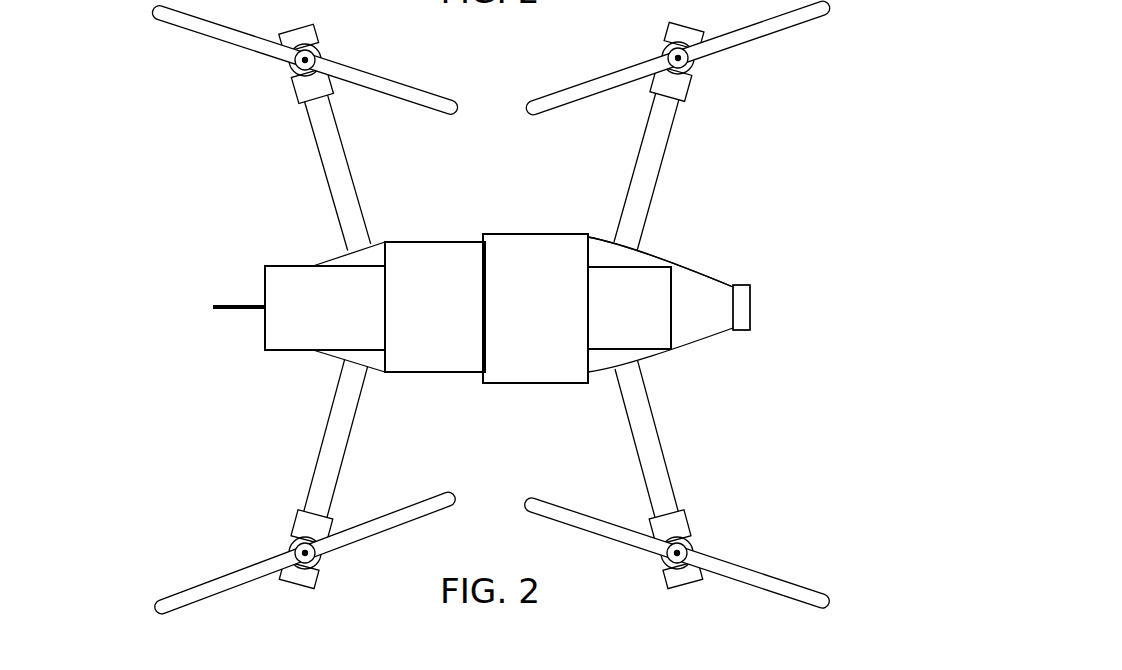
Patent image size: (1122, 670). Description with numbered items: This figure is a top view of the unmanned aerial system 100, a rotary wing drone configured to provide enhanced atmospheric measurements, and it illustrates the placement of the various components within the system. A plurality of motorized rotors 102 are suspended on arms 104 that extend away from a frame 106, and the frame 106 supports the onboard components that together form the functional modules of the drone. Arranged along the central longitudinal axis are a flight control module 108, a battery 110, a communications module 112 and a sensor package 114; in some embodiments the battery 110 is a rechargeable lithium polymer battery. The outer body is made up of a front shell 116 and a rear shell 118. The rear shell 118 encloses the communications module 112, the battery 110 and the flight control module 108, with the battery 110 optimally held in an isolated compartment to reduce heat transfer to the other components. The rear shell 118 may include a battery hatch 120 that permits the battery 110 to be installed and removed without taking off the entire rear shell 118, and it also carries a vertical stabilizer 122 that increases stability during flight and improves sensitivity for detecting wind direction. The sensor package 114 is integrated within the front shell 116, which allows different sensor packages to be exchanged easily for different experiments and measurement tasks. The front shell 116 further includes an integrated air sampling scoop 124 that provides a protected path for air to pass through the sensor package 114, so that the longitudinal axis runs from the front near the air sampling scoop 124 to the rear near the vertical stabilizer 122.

The unmanned aerial system 100 is at (272, 404).
The motorized rotors 102 is at (293, 66).
The arms 104 is at (317, 115).
The frame 106 is at (457, 372).
The flight control module 108 is at (535, 308).
The battery 110 is at (435, 307).
The communications module 112 is at (325, 308).
The sensor package 114 is at (629, 308).
The front shell 116 is at (653, 258).
The rear shell 118 is at (494, 234).
The battery hatch 120 is at (398, 240).
The vertical stabilizer 122 is at (222, 301).
The air sampling scoop 124 is at (742, 292).